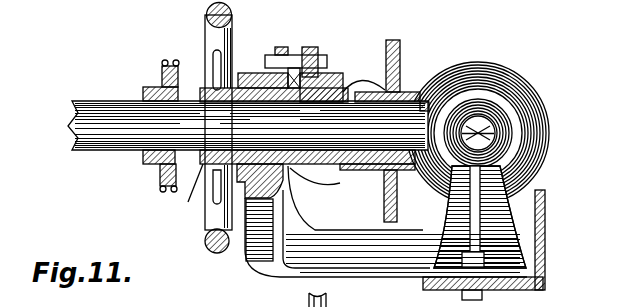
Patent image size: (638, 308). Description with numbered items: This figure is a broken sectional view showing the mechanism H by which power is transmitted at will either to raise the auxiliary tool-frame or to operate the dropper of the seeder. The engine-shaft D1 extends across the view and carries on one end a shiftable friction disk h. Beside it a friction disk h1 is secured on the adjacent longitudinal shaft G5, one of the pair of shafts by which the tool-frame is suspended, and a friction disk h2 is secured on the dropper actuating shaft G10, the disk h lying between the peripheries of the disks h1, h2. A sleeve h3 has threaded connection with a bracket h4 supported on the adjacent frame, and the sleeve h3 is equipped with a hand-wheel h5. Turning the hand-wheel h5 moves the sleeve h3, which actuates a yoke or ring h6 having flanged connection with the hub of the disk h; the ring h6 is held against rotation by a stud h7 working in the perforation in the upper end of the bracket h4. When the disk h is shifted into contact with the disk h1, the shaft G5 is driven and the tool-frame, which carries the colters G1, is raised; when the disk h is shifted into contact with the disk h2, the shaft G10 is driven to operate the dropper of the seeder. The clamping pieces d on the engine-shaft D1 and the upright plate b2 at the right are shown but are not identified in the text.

The engine-shaft D1 is at (225, 125).
The clamp screws d is at (160, 190).
The shiftable friction disk h is at (399, 56).
The friction disk h1 is at (542, 128).
The friction disk h2 is at (290, 182).
The sleeve h3 is at (185, 190).
The bracket h4 is at (252, 262).
The hand-wheel h5 is at (232, 32).
The yoke or ring h6 is at (333, 80).
The stud h7 is at (298, 60).
The power-transmitting mechanism H is at (478, 112).
The longitudinal shaft G5 is at (481, 129).
The dropper actuating shaft G10 is at (355, 198).
The colter G1 is at (329, 302).
The upright plate b2 is at (546, 242).